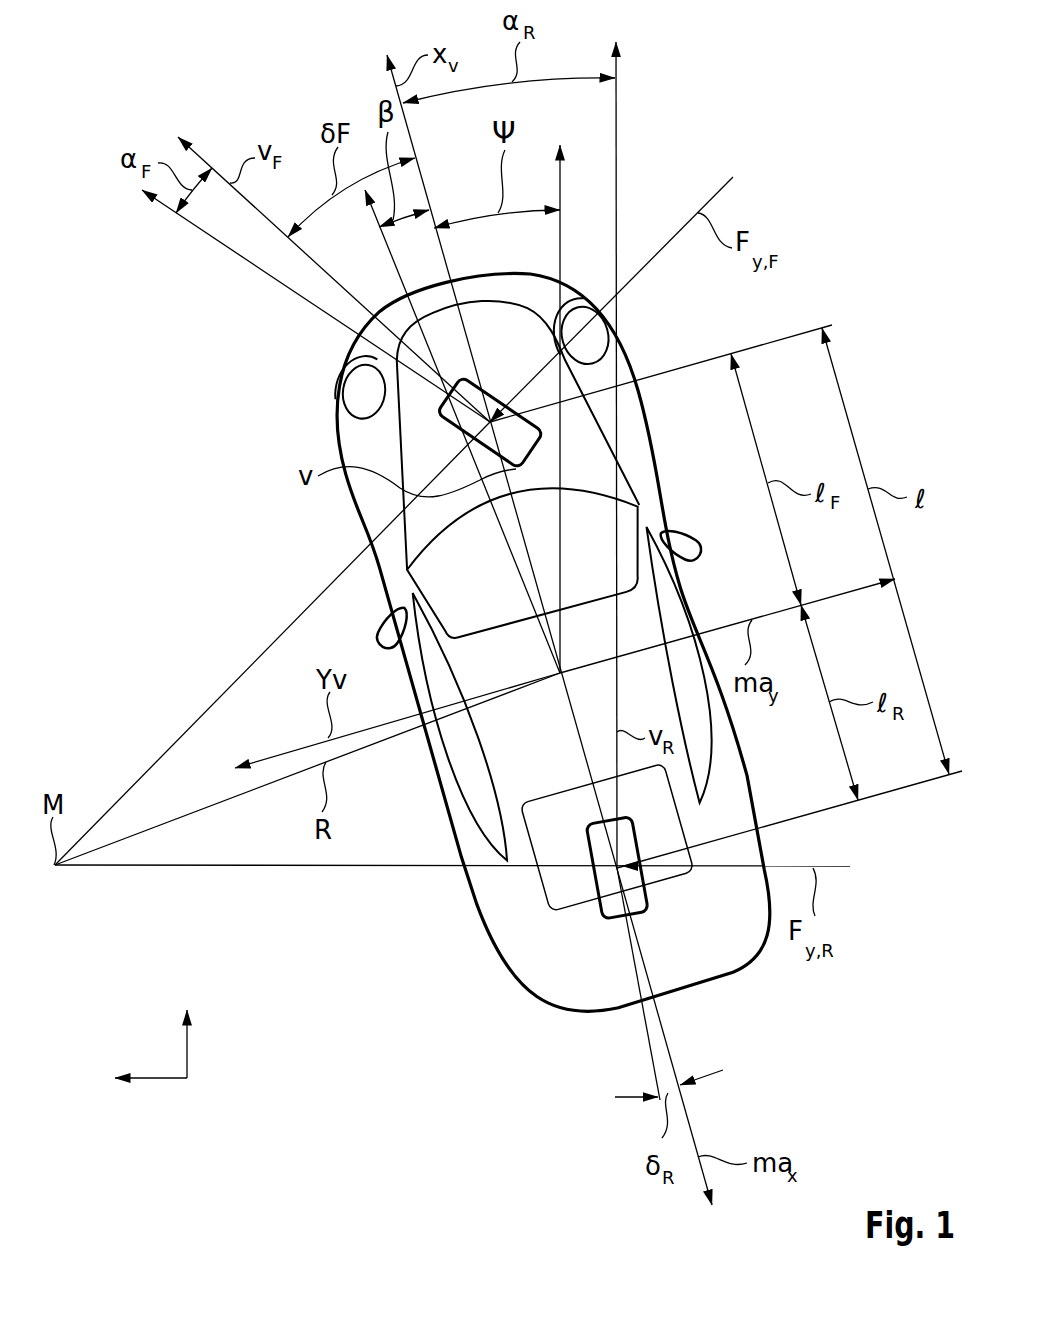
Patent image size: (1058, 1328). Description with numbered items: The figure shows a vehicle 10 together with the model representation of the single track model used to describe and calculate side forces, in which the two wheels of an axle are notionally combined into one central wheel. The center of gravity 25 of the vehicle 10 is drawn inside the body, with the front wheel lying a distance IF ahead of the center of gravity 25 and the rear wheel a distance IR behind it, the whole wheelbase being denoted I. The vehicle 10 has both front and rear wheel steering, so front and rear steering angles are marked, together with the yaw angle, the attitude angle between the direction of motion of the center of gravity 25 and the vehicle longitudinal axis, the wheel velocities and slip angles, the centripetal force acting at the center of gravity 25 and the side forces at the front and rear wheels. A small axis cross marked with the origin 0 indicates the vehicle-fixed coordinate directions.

The vehicle 10 is at (658, 197).
The center of gravity 25 is at (558, 672).
The coordinate origin 0 is at (156, 1037).